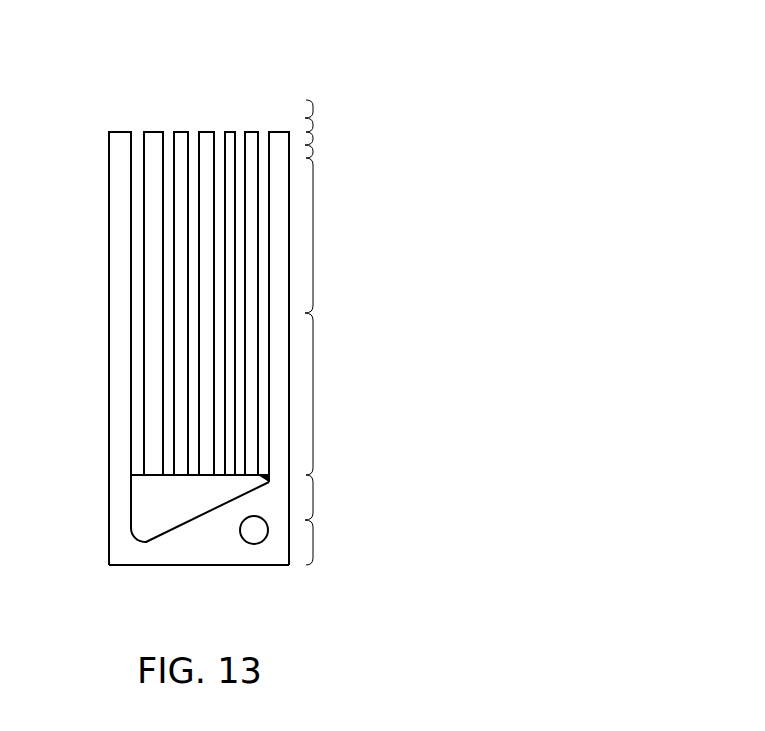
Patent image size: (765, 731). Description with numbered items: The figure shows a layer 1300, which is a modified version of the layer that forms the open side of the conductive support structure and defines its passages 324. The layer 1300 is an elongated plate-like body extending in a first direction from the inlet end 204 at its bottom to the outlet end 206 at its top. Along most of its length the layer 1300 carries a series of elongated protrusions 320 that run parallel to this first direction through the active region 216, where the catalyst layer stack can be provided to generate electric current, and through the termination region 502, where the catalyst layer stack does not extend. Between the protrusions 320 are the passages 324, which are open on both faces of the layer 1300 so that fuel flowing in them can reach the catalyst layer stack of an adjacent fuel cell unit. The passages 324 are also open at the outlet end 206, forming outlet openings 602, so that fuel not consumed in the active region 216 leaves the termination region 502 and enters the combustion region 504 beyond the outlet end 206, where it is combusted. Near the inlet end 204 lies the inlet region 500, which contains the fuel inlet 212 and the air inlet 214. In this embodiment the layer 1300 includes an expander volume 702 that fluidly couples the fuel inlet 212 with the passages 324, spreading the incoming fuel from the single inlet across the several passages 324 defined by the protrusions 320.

The layer 1300 is at (310, 56).
The outlet end 206 is at (180, 123).
The outlet openings 602 is at (222, 123).
The combustion region 504 is at (305, 118).
The termination region 502 is at (305, 145).
The active region 216 is at (309, 313).
The inlet region 500 is at (306, 520).
The protrusions 320 is at (150, 222).
The passages 324 is at (167, 297).
The expander volume 702 is at (190, 508).
The fuel inlet 212 is at (143, 533).
The inlet end 204 is at (203, 572).
The air inlet 214 is at (254, 530).